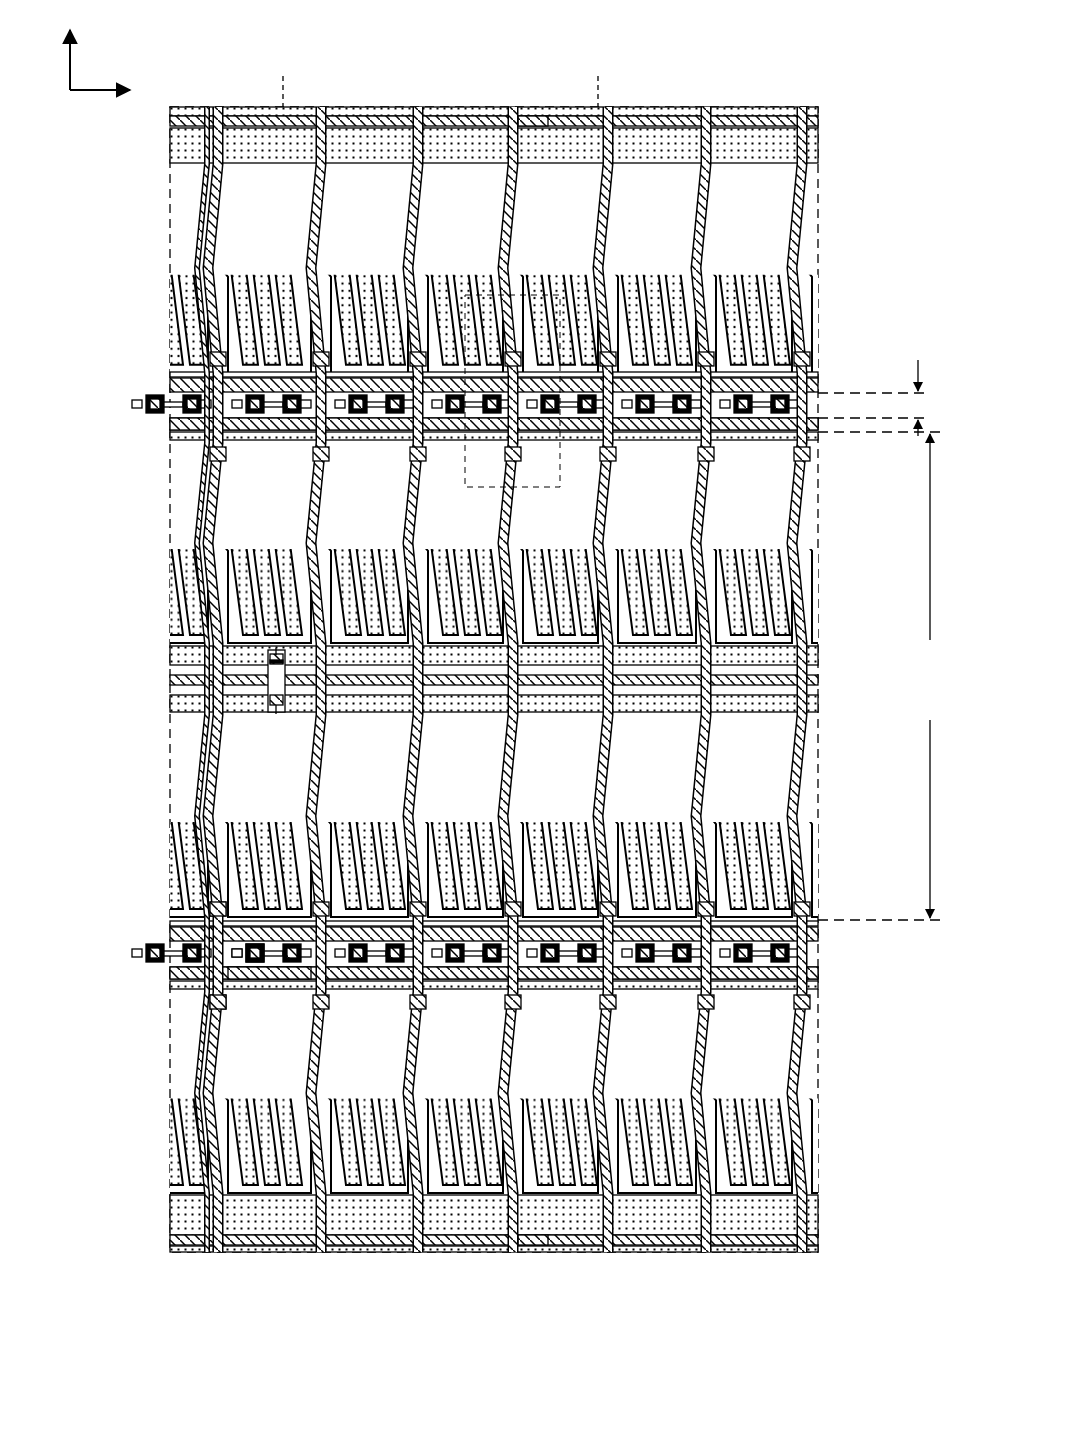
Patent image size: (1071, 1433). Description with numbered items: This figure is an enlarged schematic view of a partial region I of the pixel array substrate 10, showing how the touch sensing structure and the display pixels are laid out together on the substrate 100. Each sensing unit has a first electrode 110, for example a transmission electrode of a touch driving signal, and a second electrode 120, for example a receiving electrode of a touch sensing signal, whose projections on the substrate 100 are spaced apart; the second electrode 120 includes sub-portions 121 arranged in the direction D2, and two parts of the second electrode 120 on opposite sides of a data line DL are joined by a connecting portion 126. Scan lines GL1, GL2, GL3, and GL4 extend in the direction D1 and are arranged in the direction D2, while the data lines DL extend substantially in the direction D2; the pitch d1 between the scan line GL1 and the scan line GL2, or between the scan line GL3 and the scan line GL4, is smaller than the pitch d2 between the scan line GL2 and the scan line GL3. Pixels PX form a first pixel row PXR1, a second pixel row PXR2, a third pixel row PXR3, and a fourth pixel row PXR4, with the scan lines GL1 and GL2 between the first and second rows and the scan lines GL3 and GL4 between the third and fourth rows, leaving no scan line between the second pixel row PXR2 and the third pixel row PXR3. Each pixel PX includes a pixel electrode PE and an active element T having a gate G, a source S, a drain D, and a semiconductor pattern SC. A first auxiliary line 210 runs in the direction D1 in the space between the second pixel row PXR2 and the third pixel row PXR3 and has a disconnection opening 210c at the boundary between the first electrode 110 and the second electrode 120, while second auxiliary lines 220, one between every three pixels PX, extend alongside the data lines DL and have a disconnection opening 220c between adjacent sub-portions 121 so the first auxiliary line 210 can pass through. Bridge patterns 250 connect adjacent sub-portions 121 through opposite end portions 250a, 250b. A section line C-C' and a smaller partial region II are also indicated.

The pixel array substrate 10 is at (888, 1315).
The substrate 100 is at (188, 406).
The first electrode 110 is at (657, 107).
The second electrode 120 is at (465, 676).
The sub-portion 121 is at (360, 107).
The connecting portion 126 is at (220, 1000).
The first auxiliary line 210 is at (170, 120).
The disconnection opening 210c is at (528, 121).
The second auxiliary line 220 is at (170, 145).
The disconnection opening 220c is at (268, 662).
The bridge pattern 250 is at (218, 684).
The end portion 250a is at (264, 655).
The end portion 250b is at (264, 700).
The data line DL is at (705, 107).
The scan line GL1 is at (815, 385).
The scan line GL2 is at (815, 428).
The scan line GL3 is at (818, 933).
The scan line GL4 is at (818, 972).
The first pixel row PXR1 is at (826, 165).
The second pixel row PXR2 is at (826, 443).
The third pixel row PXR3 is at (826, 715).
The fourth pixel row PXR4 is at (826, 992).
The pixel PX is at (78, 870).
The pixel electrode PE is at (235, 878).
The active element T is at (115, 897).
The source S is at (215, 905).
The semiconductor pattern SC is at (250, 932).
The gate G is at (250, 972).
The drain D is at (240, 965).
The pitch d1 is at (874, 398).
The pitch d2 is at (880, 676).
The section line C is at (276, 637).
The section line C' is at (278, 724).
The partial region I is at (284, 75).
The partial region II is at (600, 75).
The direction D1 is at (119, 91).
The direction D2 is at (71, 45).